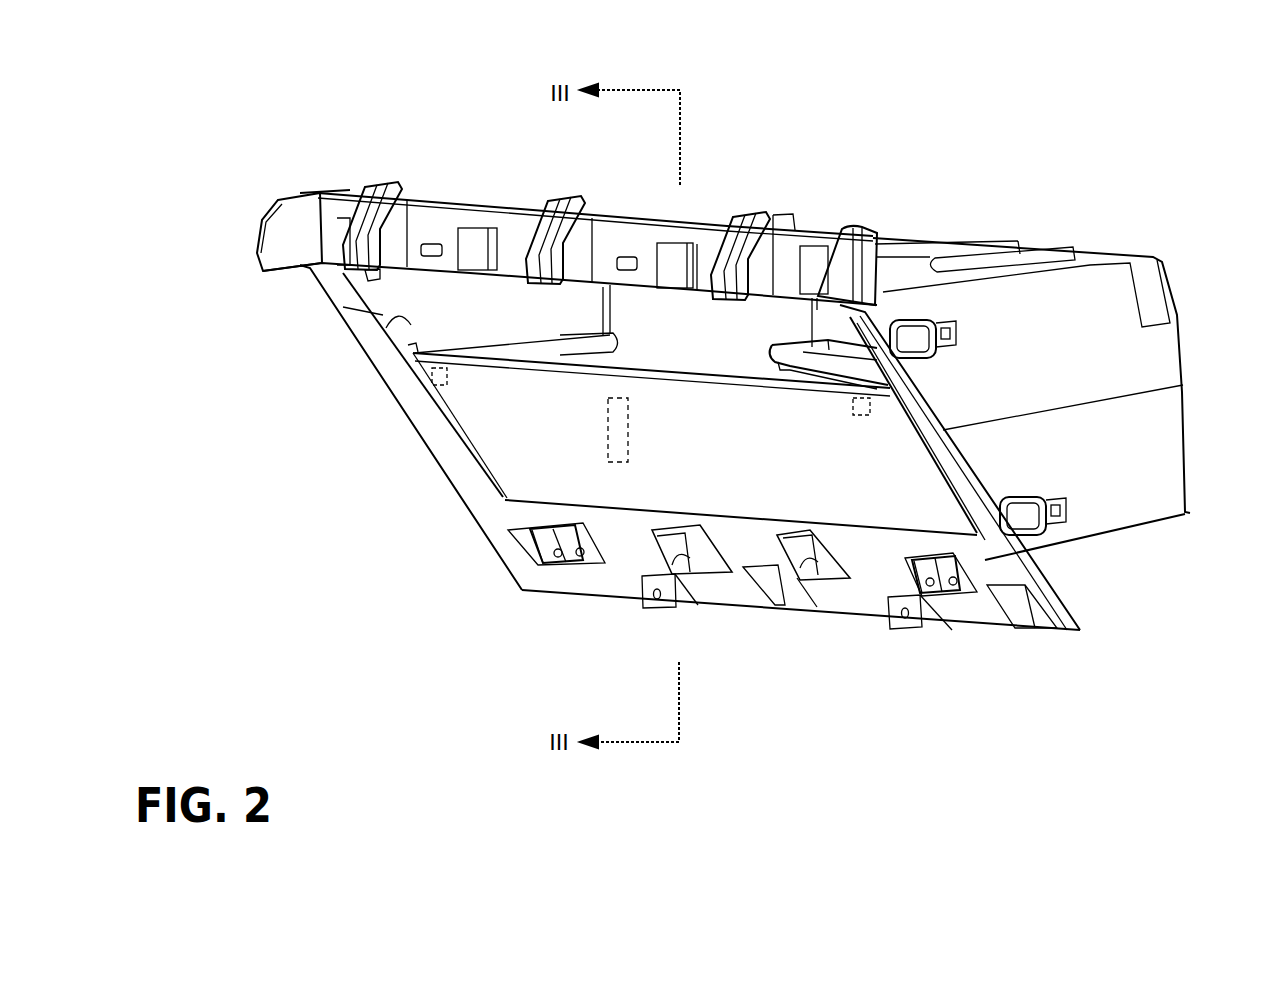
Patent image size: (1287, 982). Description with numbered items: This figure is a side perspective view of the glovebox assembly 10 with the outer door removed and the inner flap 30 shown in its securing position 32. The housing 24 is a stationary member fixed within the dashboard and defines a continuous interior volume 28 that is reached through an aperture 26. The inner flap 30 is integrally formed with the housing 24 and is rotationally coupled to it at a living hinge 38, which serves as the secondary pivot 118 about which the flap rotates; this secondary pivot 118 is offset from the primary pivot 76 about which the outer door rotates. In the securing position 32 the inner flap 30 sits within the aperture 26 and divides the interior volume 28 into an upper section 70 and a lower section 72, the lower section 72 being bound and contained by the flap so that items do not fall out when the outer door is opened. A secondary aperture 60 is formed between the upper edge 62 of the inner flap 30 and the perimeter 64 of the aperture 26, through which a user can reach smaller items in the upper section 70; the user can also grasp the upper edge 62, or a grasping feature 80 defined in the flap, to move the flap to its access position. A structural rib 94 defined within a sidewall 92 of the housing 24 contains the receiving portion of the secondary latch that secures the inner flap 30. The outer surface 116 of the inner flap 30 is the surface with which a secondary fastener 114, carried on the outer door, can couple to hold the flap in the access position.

The glovebox assembly 10 is at (797, 150).
The housing 24 is at (1128, 252).
The aperture 26 is at (423, 377).
The interior volume 28 is at (711, 312).
The inner flap 30 is at (522, 485).
The securing position 32 is at (438, 413).
The living hinge 38 is at (640, 512).
The secondary aperture 60 is at (395, 318).
The upper edge 62 is at (942, 350).
The perimeter 64 is at (614, 295).
The upper section 70 is at (788, 319).
The lower section 72 is at (872, 505).
The primary pivot 76 is at (533, 559).
The grasping feature 80 is at (622, 462).
The sidewall 92 is at (446, 290).
The structural rib 94 is at (567, 368).
The secondary fastener 114 is at (871, 418).
The outer surface 116 is at (676, 458).
The secondary pivot 118 is at (905, 533).